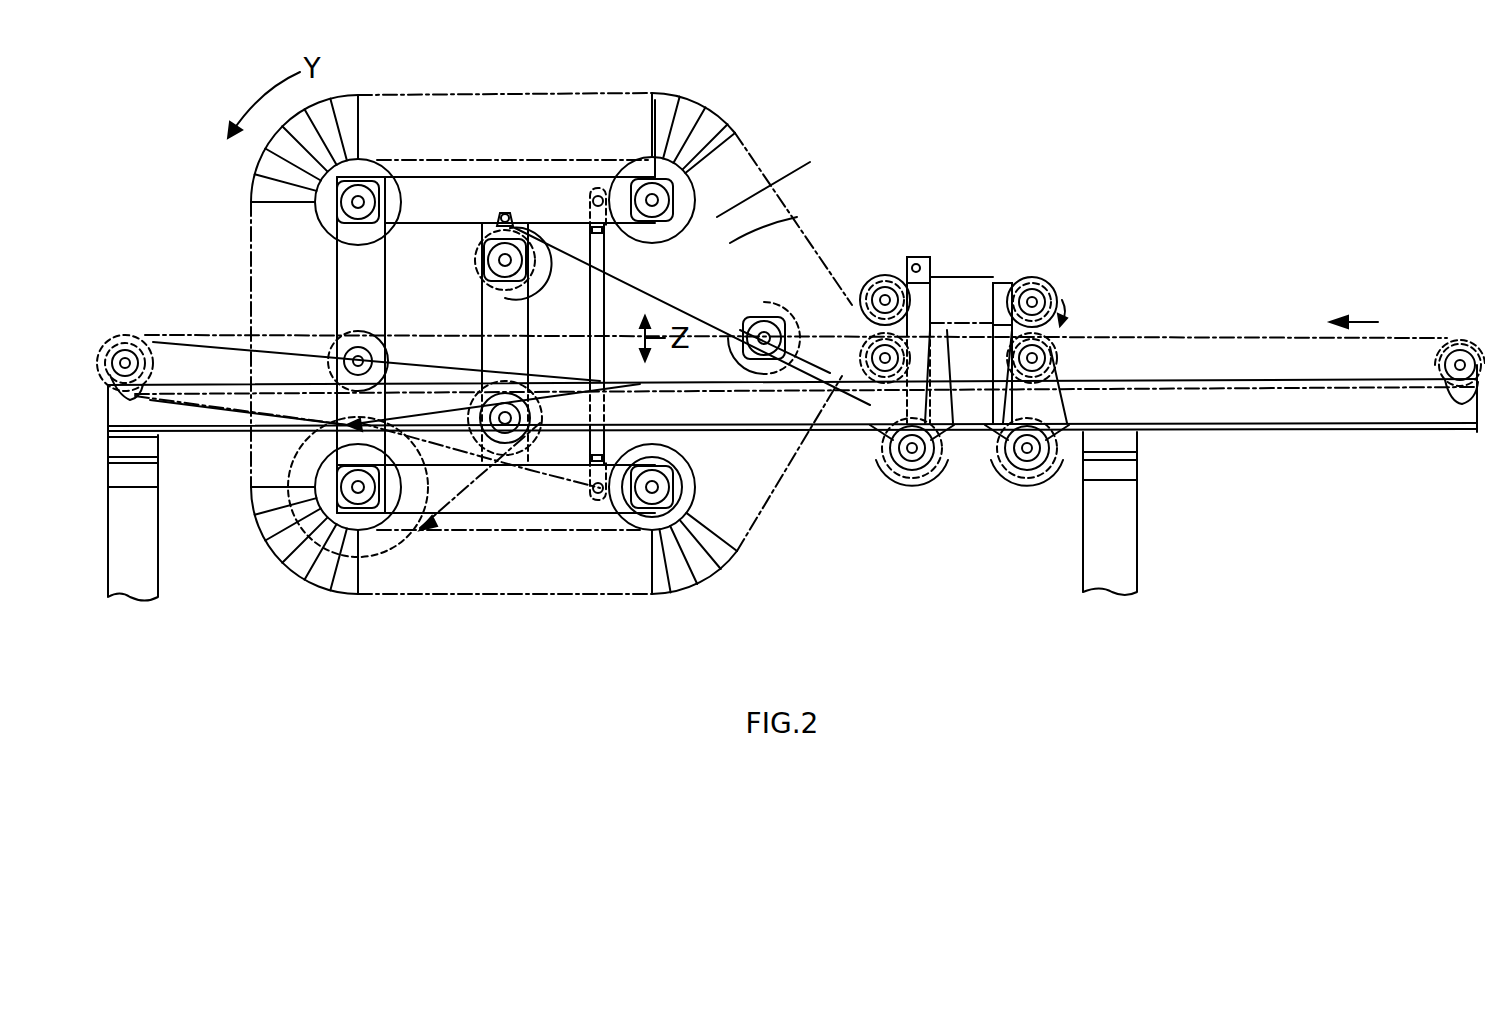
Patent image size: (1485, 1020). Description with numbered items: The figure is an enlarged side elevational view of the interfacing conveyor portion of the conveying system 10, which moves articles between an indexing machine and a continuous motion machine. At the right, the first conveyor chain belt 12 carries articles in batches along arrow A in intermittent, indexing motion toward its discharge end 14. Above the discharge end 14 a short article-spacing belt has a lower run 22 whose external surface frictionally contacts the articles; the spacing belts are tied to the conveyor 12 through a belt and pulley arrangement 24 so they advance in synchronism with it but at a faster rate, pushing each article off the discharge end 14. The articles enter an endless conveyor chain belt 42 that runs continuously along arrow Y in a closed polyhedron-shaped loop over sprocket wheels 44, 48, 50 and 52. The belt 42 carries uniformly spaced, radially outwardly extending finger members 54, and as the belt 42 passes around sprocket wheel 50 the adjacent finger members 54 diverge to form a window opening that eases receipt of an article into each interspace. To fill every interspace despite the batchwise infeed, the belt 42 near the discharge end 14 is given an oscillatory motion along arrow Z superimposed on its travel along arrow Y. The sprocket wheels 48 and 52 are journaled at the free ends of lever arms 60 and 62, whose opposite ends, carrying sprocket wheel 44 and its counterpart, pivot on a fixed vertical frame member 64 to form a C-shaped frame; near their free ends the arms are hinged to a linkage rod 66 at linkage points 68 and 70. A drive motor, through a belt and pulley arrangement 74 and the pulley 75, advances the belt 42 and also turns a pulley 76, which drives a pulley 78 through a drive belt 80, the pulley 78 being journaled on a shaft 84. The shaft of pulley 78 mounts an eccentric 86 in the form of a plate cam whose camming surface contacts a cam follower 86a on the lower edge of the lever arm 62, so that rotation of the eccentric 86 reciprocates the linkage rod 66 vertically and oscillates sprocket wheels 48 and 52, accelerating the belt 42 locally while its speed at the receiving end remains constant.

The conveying system 10 is at (990, 277).
The first conveyor chain belt 12 is at (1196, 338).
The discharge end 14 is at (860, 378).
The lower run 22 is at (947, 327).
The belt and pulley arrangement 24 is at (945, 320).
The endless conveyor chain belt 42 is at (776, 174).
The sprocket wheel 44 is at (323, 217).
The sprocket wheel 48 is at (630, 510).
The sprocket wheel 50 is at (753, 307).
The sprocket wheel 52 is at (797, 217).
The finger members 54 is at (362, 123).
The lever arm 60 is at (490, 515).
The lever arm 62 is at (470, 172).
The fixed vertical frame member 64 is at (337, 300).
The linkage rod 66 is at (606, 262).
The linkage point 68 is at (602, 192).
The linkage point 70 is at (592, 493).
The belt and pulley arrangement 74 is at (457, 517).
The pulley 75 is at (283, 570).
The pulley 76 is at (533, 392).
The pulley 78 is at (485, 260).
The drive belt 80 is at (482, 333).
The shaft 84 is at (507, 420).
The eccentric 86 is at (542, 302).
The cam follower 86a is at (515, 215).